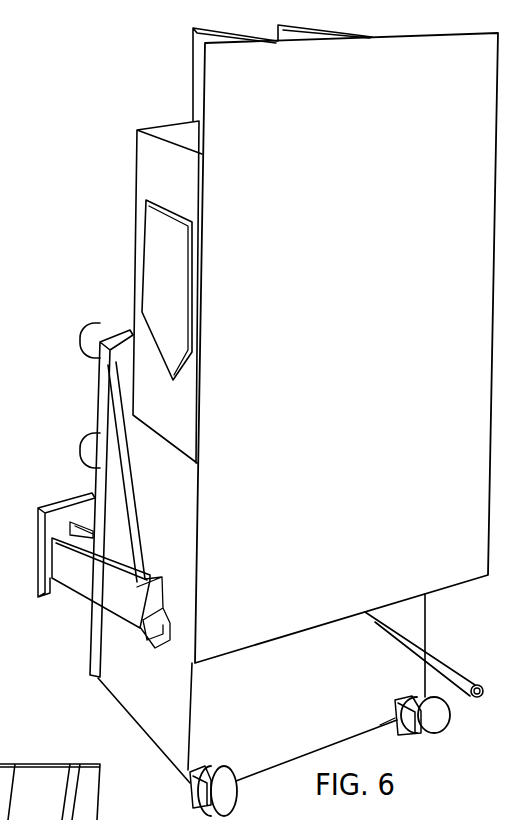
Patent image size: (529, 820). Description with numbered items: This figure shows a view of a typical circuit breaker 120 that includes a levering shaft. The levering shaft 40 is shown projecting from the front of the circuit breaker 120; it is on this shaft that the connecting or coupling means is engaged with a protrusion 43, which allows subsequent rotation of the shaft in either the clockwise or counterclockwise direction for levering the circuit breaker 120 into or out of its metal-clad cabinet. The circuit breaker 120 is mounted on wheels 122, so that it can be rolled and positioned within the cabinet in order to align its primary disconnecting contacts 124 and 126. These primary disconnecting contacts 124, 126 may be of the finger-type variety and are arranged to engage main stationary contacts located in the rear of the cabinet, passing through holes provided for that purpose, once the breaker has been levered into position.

The circuit breaker 120 is at (384, 30).
The wheels 122 is at (230, 783).
The primary disconnecting contact 124 is at (88, 323).
The primary disconnecting contact 126 is at (85, 438).
The levering shaft 40 is at (448, 665).
The protrusion 43 is at (478, 685).